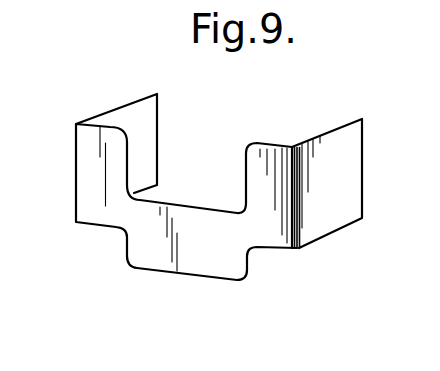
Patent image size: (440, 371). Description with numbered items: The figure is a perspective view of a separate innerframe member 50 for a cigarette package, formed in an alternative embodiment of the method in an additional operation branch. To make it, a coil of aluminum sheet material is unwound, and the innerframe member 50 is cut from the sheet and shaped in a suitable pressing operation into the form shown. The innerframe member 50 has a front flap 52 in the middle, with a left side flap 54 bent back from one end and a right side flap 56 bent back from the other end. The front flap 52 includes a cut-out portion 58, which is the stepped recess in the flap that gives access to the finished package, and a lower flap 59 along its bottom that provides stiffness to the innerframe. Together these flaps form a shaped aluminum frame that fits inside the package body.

The innerframe member 50 is at (216, 189).
The front flap 52 is at (93, 173).
The left side flap 54 is at (125, 102).
The right side flap 56 is at (333, 198).
The cut-out portion 58 is at (197, 210).
The lower flap 59 is at (167, 273).